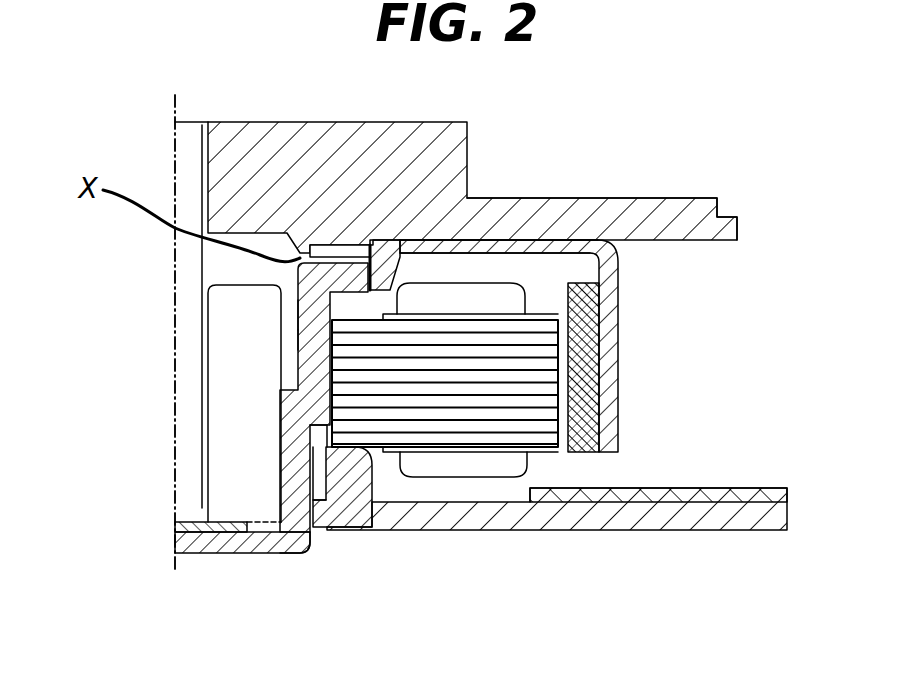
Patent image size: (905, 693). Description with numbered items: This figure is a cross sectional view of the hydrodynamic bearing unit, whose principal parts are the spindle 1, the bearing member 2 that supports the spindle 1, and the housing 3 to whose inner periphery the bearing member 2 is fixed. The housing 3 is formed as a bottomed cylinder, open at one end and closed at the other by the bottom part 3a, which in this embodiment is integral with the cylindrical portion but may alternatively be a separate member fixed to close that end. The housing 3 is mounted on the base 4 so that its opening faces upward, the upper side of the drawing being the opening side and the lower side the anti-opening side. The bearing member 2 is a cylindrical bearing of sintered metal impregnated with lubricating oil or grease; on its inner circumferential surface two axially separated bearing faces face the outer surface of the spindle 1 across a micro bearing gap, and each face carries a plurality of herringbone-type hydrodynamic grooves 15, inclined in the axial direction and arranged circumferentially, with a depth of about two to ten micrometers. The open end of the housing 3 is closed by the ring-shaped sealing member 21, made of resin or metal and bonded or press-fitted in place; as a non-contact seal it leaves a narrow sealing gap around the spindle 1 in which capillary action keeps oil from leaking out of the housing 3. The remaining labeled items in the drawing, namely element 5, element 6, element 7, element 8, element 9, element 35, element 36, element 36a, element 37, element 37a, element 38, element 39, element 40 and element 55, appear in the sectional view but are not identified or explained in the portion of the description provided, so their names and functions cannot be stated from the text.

The spindle 1 is at (192, 463).
The bearing member 2 is at (447, 122).
The housing 3 is at (612, 290).
The bottom part 3a is at (497, 238).
The base 4 is at (600, 345).
The coil 5 is at (615, 406).
The base plate 6 is at (677, 530).
The bracket 7 is at (300, 366).
The thrust plate 8 is at (187, 522).
The rotor 9 is at (233, 440).
The hydrodynamic grooves 15 is at (490, 468).
The sealing member 21 is at (293, 555).
The lead wire 35 is at (240, 285).
The bearing 36 is at (340, 252).
The bearing portion 36a is at (290, 316).
The sleeve 37 is at (293, 333).
The sleeve flange 37a is at (380, 240).
The bearing 38 is at (357, 468).
The groove 39 is at (318, 488).
The bottom plate 40 is at (255, 553).
The top plate 55 is at (622, 198).